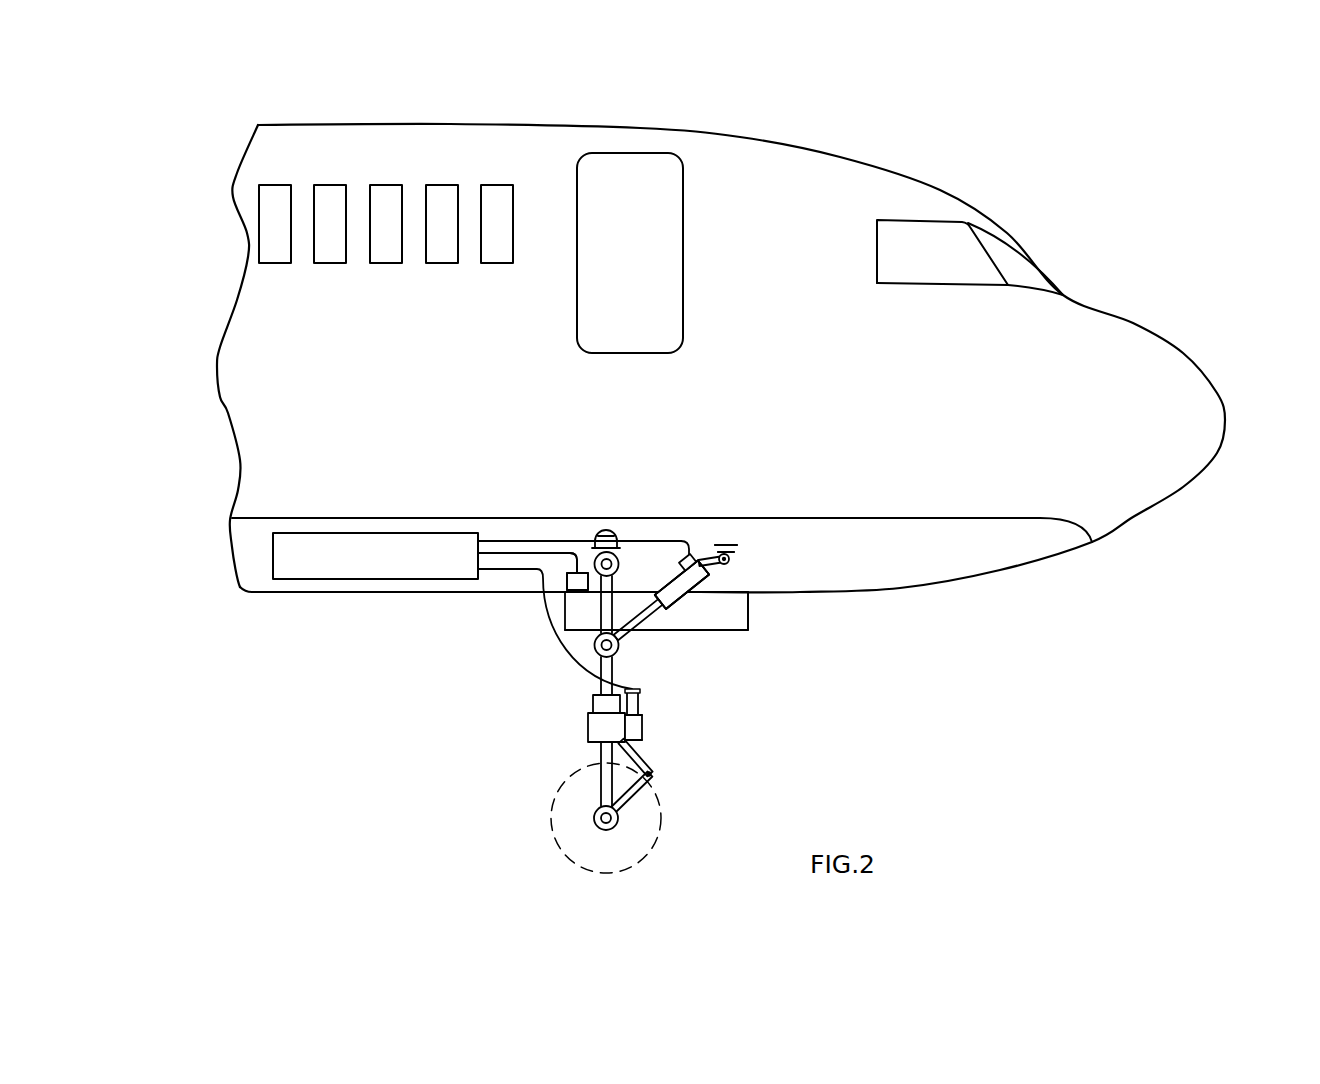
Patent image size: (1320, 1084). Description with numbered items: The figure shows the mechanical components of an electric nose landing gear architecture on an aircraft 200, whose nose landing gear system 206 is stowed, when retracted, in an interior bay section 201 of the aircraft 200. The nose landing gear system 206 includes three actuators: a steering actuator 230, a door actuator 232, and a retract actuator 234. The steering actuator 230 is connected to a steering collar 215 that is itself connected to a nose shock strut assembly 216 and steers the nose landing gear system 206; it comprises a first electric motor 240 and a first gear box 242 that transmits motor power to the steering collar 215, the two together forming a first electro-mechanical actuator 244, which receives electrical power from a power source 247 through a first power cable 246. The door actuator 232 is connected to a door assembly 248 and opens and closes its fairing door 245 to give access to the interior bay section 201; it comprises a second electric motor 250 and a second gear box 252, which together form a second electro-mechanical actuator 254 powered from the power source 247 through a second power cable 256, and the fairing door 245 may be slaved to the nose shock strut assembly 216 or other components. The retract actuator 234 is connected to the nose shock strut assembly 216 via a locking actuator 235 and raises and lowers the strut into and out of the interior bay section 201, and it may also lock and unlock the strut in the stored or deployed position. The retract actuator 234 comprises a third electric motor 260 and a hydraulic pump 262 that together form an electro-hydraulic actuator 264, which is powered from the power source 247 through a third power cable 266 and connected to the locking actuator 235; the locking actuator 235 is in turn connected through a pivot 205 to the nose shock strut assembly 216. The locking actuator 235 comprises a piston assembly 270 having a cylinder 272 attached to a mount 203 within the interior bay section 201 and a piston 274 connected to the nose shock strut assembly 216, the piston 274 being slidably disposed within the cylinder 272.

The aircraft 200 is at (1100, 232).
The interior bay section 201 is at (828, 525).
The mount 203 is at (737, 527).
The pivot 205 is at (590, 672).
The nose landing gear system 206 is at (706, 667).
The steering collar 215 is at (595, 728).
The nose shock strut assembly 216 is at (672, 787).
The steering actuator 230 is at (642, 727).
The door actuator 232 is at (565, 590).
The retract actuator 234 is at (672, 600).
The locking actuator 235 is at (697, 611).
The first electric motor 240 is at (641, 698).
The first gear box 242 is at (641, 737).
The first electro-mechanical actuator 244 is at (665, 710).
The fairing door 245 is at (733, 600).
The first power cable 246 is at (585, 672).
The power source 247 is at (272, 554).
The door assembly 248 is at (742, 610).
The second electric motor 250 is at (567, 573).
The second gear box 252 is at (584, 573).
The second electro-mechanical actuator 254 is at (574, 605).
The second power cable 256 is at (498, 553).
The third electric motor 260 is at (714, 545).
The hydraulic pump 262 is at (680, 557).
The electro-hydraulic actuator 264 is at (693, 530).
The third power cable 266 is at (642, 541).
The piston assembly 270 is at (716, 609).
The cylinder 272 is at (713, 574).
The piston 274 is at (633, 628).